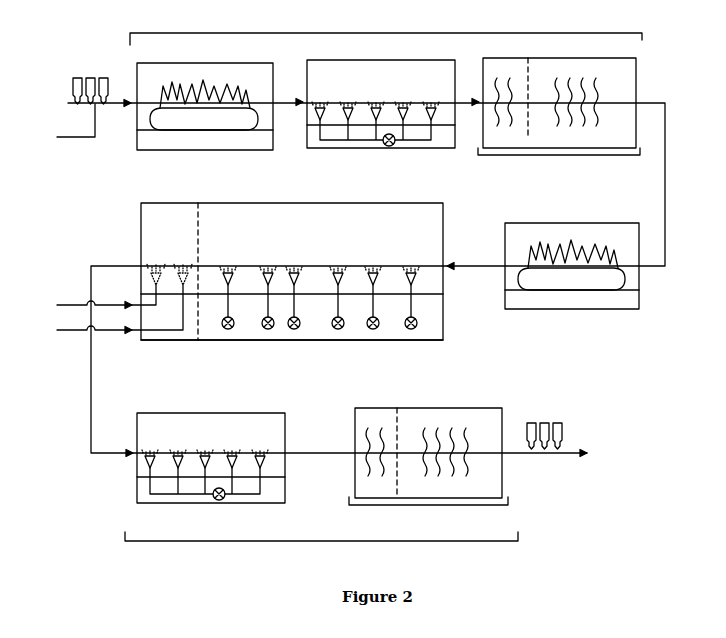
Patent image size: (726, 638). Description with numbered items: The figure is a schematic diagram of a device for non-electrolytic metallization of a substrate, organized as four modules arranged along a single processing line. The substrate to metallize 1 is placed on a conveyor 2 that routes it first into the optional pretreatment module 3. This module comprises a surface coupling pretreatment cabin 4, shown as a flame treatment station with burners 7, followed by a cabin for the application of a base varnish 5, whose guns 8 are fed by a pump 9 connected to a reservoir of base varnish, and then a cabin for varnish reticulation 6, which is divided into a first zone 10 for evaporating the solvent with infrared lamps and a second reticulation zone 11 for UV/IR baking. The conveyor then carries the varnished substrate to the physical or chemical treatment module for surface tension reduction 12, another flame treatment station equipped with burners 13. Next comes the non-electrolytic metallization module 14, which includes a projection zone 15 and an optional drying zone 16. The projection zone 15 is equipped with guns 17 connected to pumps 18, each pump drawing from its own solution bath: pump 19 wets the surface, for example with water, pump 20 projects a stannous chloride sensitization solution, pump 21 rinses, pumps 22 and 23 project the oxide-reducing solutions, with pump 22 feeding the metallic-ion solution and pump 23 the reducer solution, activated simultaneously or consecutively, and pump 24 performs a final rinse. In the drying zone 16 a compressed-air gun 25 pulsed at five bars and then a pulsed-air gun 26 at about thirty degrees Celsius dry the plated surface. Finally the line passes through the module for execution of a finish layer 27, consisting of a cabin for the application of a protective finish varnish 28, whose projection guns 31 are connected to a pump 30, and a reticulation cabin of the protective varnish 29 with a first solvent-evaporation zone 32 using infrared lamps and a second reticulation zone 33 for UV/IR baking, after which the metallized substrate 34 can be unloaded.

The substrate to metallize 1 is at (75, 78).
The conveyor 2 is at (67, 125).
The pretreatment module 3 is at (330, 33).
The surface coupling pretreatment cabin 4 is at (150, 63).
The cabin for the application of a base varnish 5 is at (371, 60).
The cabin for varnish reticulation 6 is at (555, 155).
The burners 7 is at (215, 130).
The guns 8 is at (431, 125).
The pump 9 is at (389, 146).
The partition 10 is at (495, 57).
The second reticulation zone 11 is at (637, 56).
The physical or chemical treatment module for surface tension reduction 12 is at (639, 276).
The burners 13 is at (610, 290).
The non electrolytic metallization module 14 is at (141, 222).
The projection zone 15 is at (316, 212).
The drying zone 16 is at (163, 210).
The guns 17 is at (415, 295).
The pumps 18 is at (417, 328).
The pump 19 is at (411, 329).
The pump 20 is at (373, 329).
The pump 21 is at (338, 329).
The pump 22 is at (294, 329).
The pump 23 is at (268, 329).
The rinsing pump 24 is at (228, 329).
The compressed-air gun 25 is at (109, 311).
The pulsed air gun 26 is at (96, 298).
The module for execution of a finish layer 27 is at (323, 541).
The cabin for the application of a protective finish varnish 28 is at (197, 413).
The reticulation cabin of the protective varnish 29 is at (417, 505).
The pump 30 is at (219, 500).
The projection guns 31 is at (262, 478).
The first zone for the evaporation of the solvent 32 is at (368, 408).
The second reticulation zone 33 is at (502, 408).
The substrate metallized 34 is at (563, 422).